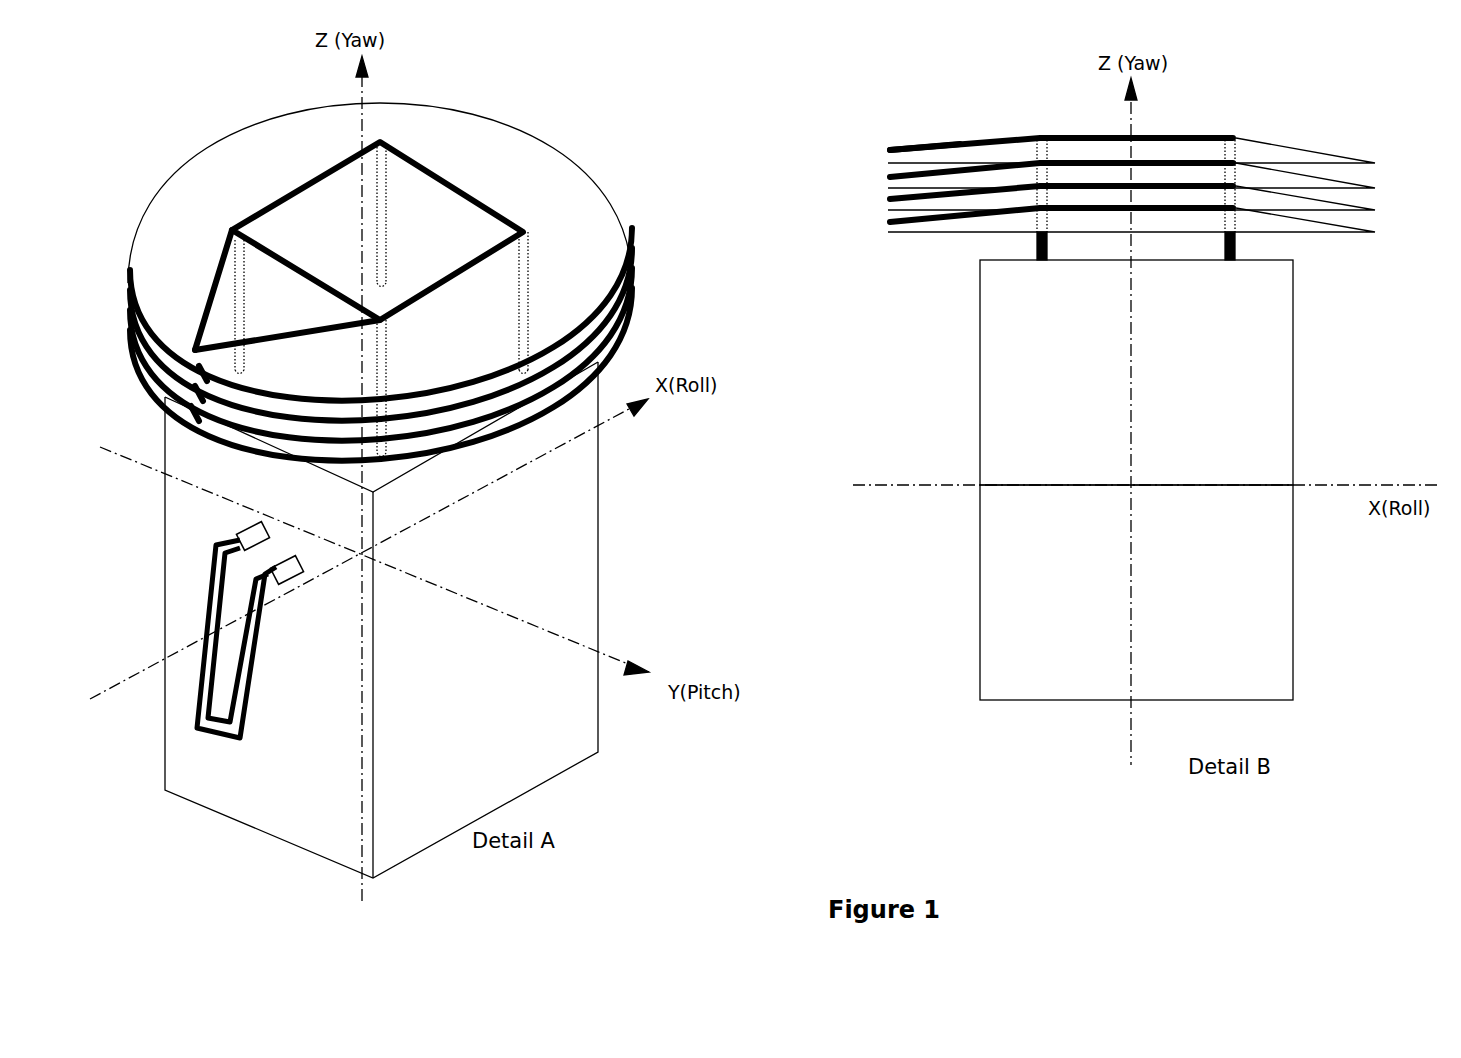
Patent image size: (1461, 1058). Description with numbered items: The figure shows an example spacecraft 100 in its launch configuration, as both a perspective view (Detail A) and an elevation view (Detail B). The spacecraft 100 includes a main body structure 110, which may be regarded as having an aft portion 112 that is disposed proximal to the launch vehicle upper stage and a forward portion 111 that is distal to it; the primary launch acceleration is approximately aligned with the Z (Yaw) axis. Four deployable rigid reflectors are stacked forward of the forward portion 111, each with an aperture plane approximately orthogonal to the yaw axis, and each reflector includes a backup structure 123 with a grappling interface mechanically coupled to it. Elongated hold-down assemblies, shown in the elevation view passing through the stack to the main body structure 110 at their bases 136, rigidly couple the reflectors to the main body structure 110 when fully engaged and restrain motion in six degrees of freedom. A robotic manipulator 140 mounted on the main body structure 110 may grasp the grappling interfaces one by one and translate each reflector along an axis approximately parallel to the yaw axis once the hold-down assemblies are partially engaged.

The spacecraft 100 is at (200, 72).
The main body structure 110 is at (568, 528).
The forward portion 111 is at (959, 484).
The aft portion 112 is at (959, 700).
The backup structure 123 is at (458, 190).
The post base 136 is at (1036, 250).
The robotic manipulator 140 is at (214, 586).